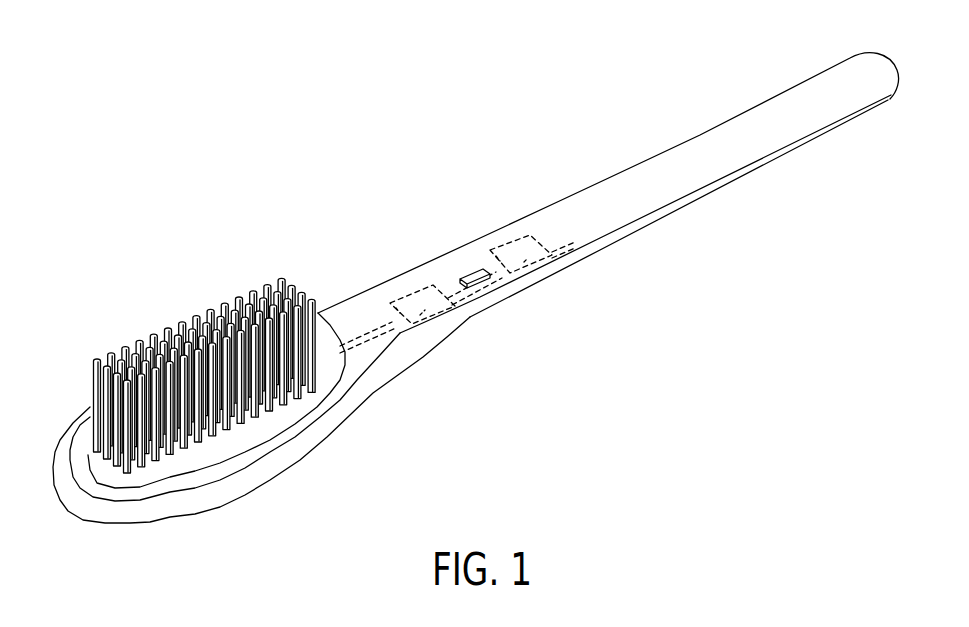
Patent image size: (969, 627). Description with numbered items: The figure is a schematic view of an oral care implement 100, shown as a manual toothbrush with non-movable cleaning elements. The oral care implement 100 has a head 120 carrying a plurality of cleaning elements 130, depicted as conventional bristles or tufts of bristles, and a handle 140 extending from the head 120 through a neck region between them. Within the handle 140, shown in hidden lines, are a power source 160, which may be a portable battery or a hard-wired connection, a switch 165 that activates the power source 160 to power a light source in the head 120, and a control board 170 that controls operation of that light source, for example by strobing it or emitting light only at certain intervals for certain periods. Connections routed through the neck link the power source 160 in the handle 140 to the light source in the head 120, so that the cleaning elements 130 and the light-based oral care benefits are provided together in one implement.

The oral care implement 100 is at (519, 87).
The head 120 is at (82, 413).
The cleaning elements 130 is at (314, 243).
The handle 140 is at (710, 130).
The power source 160 is at (533, 274).
The switch 165 is at (466, 276).
The control board 170 is at (440, 324).